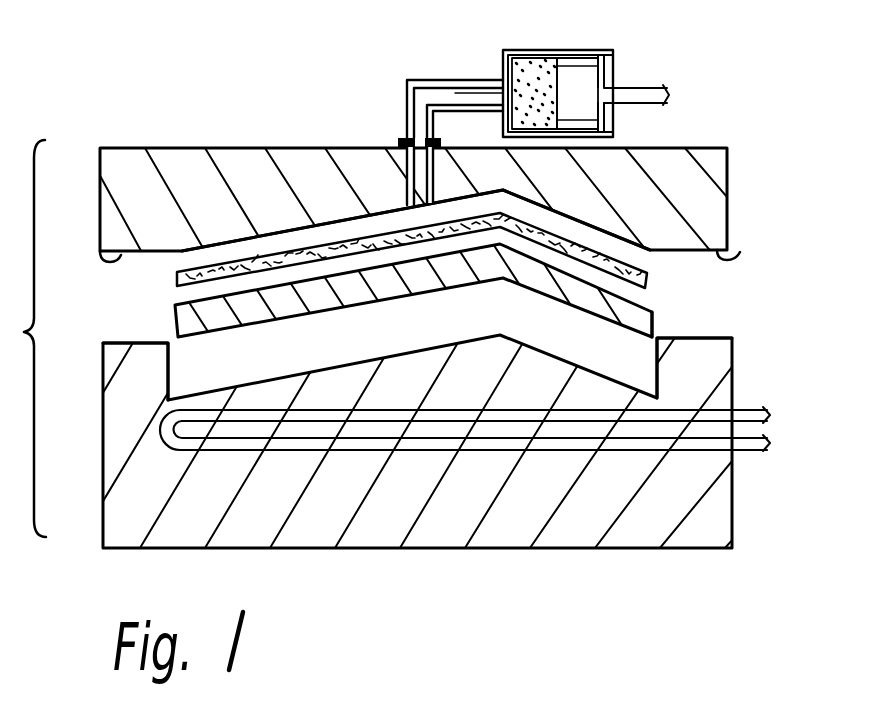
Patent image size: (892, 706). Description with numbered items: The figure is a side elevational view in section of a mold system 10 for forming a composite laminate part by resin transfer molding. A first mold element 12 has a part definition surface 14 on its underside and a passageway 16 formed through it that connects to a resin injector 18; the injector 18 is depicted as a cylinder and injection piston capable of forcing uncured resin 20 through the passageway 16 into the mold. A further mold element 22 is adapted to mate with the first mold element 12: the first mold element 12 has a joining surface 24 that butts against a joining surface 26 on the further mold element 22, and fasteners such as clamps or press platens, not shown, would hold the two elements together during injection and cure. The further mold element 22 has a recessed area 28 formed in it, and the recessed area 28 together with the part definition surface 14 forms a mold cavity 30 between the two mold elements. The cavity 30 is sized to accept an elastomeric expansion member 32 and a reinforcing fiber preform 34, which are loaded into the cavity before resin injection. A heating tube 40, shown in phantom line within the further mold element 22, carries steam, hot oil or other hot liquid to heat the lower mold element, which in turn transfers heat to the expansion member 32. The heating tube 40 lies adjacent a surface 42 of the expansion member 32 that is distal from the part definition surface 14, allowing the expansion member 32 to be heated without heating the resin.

The mold system 10 is at (752, 126).
The first mold element 12 is at (720, 214).
The part definition surface 14 is at (220, 248).
The passageway 16 is at (410, 188).
The resin injector 18 is at (504, 62).
The uncured resin 20 is at (447, 79).
The further mold element 22 is at (735, 518).
The joining surface 24 is at (113, 262).
The joining surface 26 is at (120, 343).
The recessed area 28 is at (301, 360).
The mold cavity 30 is at (150, 299).
The elastomeric expansion member 32 is at (652, 316).
The reinforcing fiber preform 34 is at (648, 281).
The heating tube 40 is at (833, 415).
The surface of the expansion member 42 is at (580, 309).